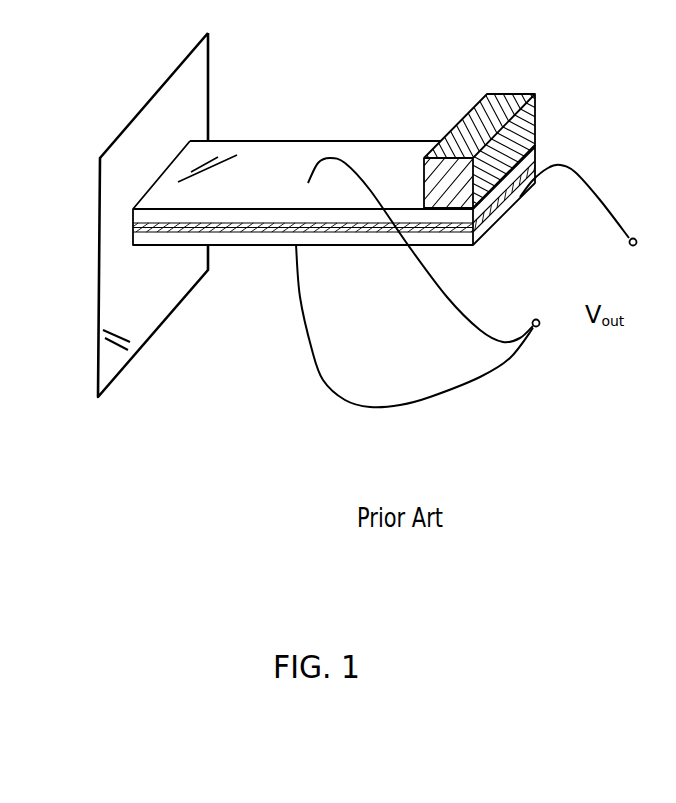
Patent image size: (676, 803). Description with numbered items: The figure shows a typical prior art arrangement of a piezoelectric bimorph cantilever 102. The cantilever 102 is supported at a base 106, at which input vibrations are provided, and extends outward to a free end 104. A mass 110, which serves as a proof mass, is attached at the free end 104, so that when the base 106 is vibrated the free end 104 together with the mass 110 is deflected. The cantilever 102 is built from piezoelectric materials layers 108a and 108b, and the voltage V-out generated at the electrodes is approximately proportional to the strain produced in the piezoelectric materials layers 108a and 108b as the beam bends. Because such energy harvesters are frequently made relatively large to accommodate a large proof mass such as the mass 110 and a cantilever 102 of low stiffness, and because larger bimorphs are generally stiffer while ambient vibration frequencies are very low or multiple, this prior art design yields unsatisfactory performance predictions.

The piezoelectric bimorph cantilever 102 is at (297, 137).
The free end 104 is at (500, 215).
The base 106 is at (182, 148).
The piezoelectric materials layer 108a is at (292, 193).
The piezoelectric materials layer 108b is at (223, 240).
The mass 110 is at (537, 123).